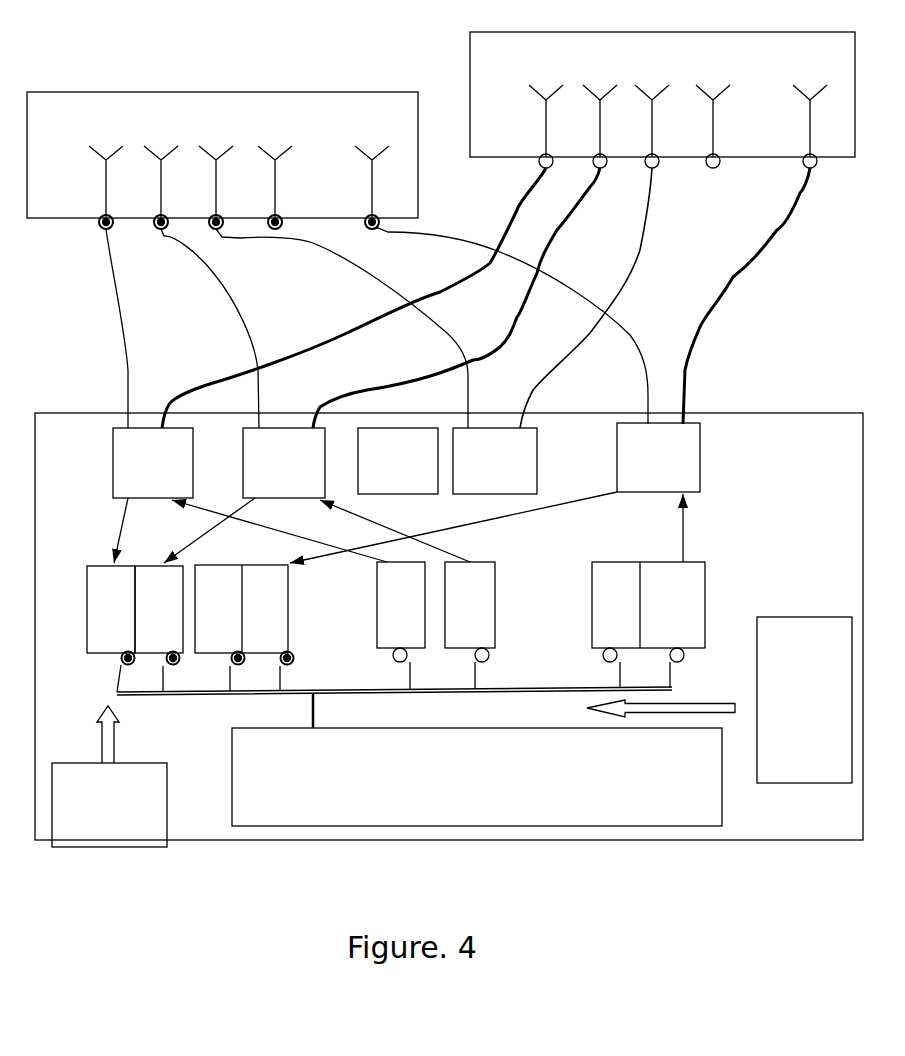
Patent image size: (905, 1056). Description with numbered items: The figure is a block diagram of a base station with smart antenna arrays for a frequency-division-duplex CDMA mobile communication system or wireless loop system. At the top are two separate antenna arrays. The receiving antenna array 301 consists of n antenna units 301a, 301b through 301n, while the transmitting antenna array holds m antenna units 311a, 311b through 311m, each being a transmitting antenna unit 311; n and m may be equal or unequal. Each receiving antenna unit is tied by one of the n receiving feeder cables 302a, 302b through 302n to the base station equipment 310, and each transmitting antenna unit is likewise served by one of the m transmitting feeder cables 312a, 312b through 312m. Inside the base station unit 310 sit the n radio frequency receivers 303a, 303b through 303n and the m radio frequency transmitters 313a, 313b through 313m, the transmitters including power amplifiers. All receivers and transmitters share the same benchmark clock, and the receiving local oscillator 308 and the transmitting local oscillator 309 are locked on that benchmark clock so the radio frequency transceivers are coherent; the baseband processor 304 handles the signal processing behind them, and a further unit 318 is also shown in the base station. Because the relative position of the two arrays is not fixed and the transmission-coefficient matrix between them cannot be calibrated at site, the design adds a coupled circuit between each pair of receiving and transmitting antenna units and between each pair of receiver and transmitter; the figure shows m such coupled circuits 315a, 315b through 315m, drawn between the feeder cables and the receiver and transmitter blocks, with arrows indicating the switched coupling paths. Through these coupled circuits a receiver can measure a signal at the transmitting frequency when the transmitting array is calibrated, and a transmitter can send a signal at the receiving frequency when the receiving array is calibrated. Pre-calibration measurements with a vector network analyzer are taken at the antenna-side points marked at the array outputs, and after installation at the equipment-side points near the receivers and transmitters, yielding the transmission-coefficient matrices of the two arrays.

The receiving antenna array 301 is at (222, 170).
The receiving antenna unit 301a is at (101, 175).
The receiving antenna unit 301b is at (162, 175).
The receiving antenna unit 301n is at (363, 182).
The transmitting antenna unit 311 is at (662, 110).
The transmitting antenna unit 311a is at (546, 113).
The transmitting antenna unit 311b is at (600, 113).
The transmitting antenna unit 311m is at (801, 119).
The receiving feeder cable 302a is at (109, 328).
The receiving feeder cable 302b is at (210, 328).
The receiving feeder cable 302n is at (510, 326).
The transmitting feeder cable 312a is at (354, 298).
The transmitting feeder cable 312b is at (456, 298).
The transmitting feeder cable 312m is at (746, 296).
The base station unit 310 is at (449, 626).
The coupled circuit 315a is at (153, 463).
The coupled circuit 315b is at (284, 463).
The coupled circuit 315m is at (658, 457).
The radio frequency receiver 303a is at (123, 629).
The radio frequency receiver 303b is at (172, 627).
The radio frequency receiver 303n is at (261, 626).
The radio frequency transmitter 313a is at (409, 622).
The radio frequency transmitter 313b is at (482, 622).
The radio frequency transmitter 313m is at (652, 624).
The controller 318 is at (804, 700).
The transmitting local oscillator 309 is at (394, 695).
The baseband processor 304 is at (477, 777).
The receiving local oscillator 308 is at (109, 776).